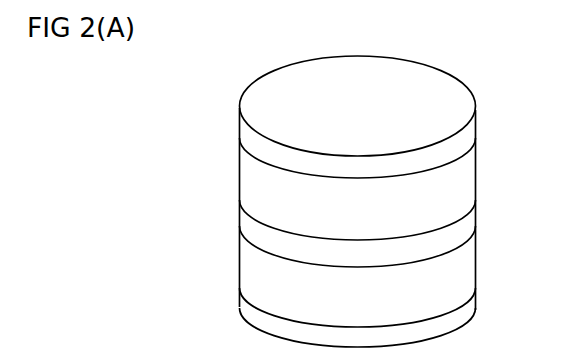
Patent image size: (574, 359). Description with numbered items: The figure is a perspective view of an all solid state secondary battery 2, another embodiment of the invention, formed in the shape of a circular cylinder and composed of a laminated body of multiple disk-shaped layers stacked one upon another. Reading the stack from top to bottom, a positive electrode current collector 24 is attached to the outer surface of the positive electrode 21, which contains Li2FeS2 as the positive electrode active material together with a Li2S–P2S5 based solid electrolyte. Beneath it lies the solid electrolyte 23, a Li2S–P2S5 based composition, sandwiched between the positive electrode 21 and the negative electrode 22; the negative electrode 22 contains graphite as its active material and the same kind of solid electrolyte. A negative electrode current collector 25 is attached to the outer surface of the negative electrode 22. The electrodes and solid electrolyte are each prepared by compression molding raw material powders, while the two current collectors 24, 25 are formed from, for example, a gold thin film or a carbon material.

The all solid state secondary battery 2 is at (213, 90).
The positive electrode current collector 24 is at (485, 125).
The positive electrode 21 is at (477, 170).
The solid electrolyte 23 is at (477, 215).
The negative electrode 22 is at (477, 260).
The negative electrode current collector 25 is at (477, 302).